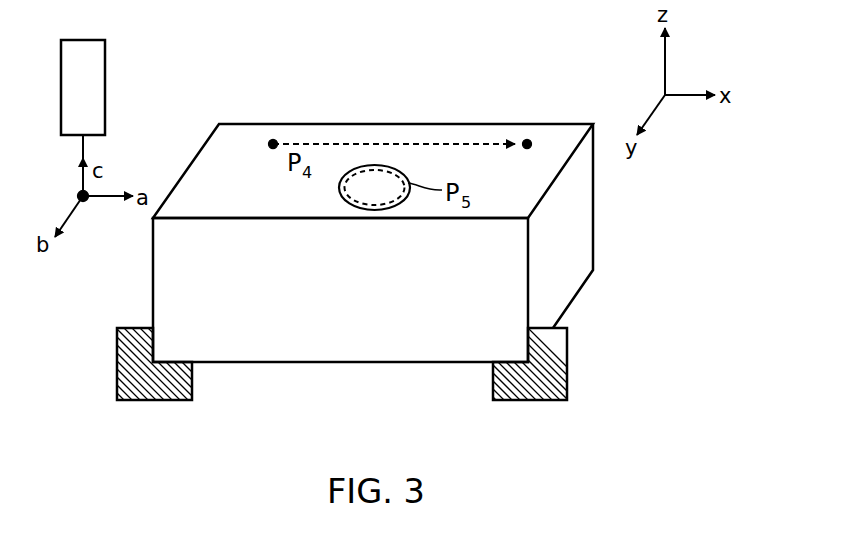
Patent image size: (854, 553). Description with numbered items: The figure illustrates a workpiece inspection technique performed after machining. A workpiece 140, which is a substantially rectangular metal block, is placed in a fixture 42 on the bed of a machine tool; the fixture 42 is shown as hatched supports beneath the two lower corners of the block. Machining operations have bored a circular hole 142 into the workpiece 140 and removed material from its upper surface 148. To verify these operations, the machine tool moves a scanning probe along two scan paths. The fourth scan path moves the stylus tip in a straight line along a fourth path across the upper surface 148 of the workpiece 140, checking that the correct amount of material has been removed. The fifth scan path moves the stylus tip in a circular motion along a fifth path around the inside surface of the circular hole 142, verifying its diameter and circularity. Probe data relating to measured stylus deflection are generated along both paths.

The workpiece 140 is at (560, 124).
The circular hole 142 is at (375, 186).
The upper surface 148 is at (265, 206).
The fixture 42 is at (133, 399).